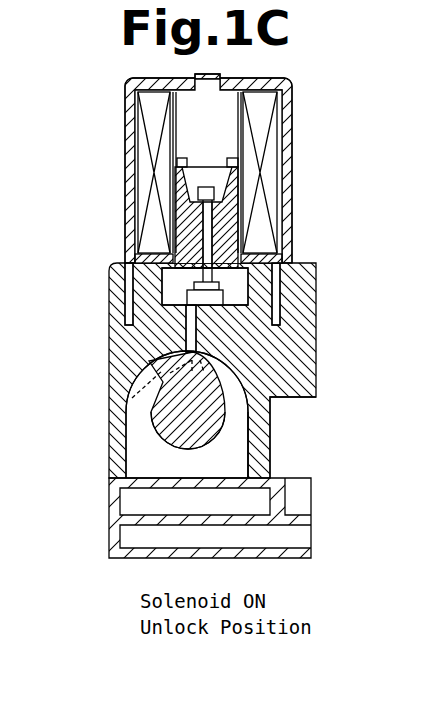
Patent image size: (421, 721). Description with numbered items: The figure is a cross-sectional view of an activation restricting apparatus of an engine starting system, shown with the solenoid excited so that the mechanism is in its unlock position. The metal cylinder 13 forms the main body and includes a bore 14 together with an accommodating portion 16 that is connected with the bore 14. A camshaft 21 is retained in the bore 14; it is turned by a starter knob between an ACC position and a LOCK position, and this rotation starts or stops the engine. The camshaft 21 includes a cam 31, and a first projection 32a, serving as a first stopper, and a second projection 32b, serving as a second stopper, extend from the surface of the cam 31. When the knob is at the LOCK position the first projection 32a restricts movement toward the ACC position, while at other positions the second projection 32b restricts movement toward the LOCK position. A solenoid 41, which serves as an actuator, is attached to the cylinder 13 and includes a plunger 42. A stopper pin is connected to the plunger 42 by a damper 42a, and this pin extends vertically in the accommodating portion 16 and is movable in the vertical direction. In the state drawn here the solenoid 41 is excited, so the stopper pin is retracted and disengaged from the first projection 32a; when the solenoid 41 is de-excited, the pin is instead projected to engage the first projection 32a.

The cylinder 13 is at (310, 291).
The bore 14 is at (256, 437).
The accommodating portion 16 is at (186, 279).
The camshaft 21 is at (150, 418).
The cam 31 is at (221, 426).
The first projection 32a is at (127, 405).
The second projection 32b is at (136, 378).
The solenoid 41 is at (291, 118).
The plunger 42 is at (206, 170).
The damper 42a is at (212, 304).